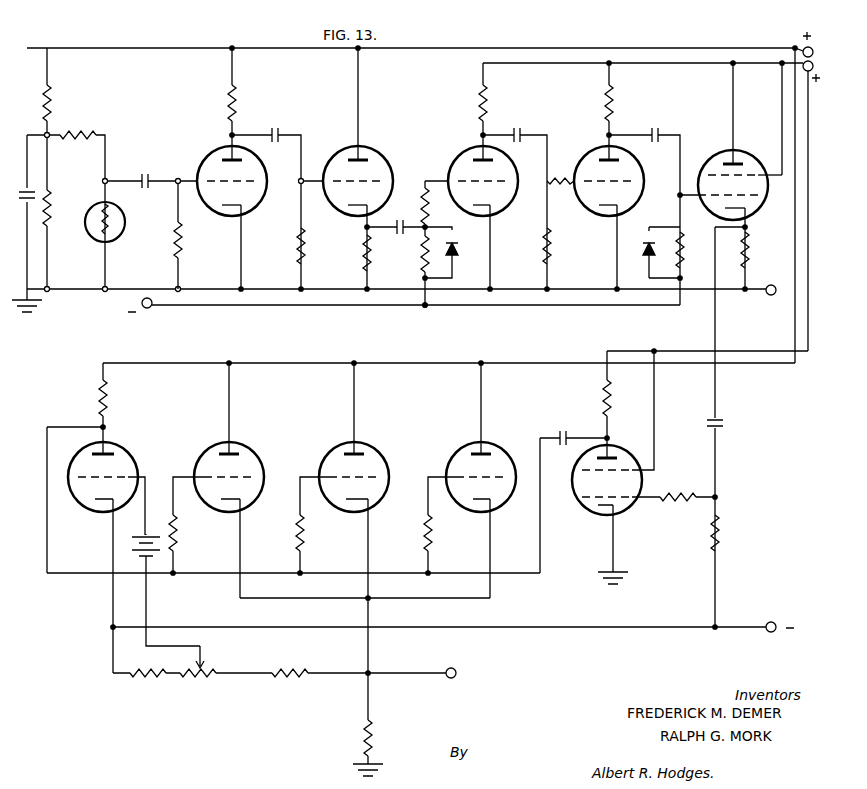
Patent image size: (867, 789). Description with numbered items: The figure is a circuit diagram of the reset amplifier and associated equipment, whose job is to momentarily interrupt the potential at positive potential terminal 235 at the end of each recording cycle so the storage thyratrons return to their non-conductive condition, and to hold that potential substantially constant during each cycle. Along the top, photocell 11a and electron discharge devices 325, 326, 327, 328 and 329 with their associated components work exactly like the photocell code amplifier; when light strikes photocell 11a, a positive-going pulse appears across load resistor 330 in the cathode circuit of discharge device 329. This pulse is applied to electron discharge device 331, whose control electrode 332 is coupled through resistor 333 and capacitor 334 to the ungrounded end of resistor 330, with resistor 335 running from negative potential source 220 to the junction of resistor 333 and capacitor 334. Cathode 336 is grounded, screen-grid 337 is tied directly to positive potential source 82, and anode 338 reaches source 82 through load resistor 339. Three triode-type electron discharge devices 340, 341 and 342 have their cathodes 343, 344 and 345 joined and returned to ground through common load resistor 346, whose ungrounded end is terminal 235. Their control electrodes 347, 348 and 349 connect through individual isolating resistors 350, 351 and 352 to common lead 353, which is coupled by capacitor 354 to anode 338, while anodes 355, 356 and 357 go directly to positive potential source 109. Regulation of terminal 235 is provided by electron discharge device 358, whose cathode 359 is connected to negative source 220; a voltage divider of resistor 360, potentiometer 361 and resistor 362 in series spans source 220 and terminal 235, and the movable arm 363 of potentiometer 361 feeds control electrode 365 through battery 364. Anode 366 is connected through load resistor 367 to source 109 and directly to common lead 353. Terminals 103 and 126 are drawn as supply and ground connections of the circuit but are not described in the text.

The photocell 11a is at (120, 236).
The positive potential source 82 is at (803, 49).
The positive potential source 109 is at (804, 69).
The negative supply terminal 103 is at (150, 306).
The ground terminal 126 is at (768, 296).
The negative potential source 220 is at (769, 623).
The positive potential terminal 235 is at (457, 674).
The electron discharge device 325 is at (249, 209).
The electron discharge device 326 is at (334, 212).
The electron discharge device 327 is at (500, 211).
The electron discharge device 328 is at (590, 211).
The electron discharge device 329 is at (748, 167).
The load resistor 330 is at (750, 263).
The electron discharge device 331 is at (583, 487).
The control electrode 332 is at (618, 495).
The resistor 333 is at (680, 505).
The capacitor 334 is at (724, 426).
The resistor 335 is at (722, 540).
The cathode 336 is at (607, 510).
The screen-grid 337 is at (625, 466).
The anode 338 is at (590, 466).
The load resistor 339 is at (603, 398).
The electron discharge device 340 is at (494, 462).
The electron discharge device 341 is at (378, 465).
The electron discharge device 342 is at (247, 460).
The cathode 343 is at (481, 501).
The cathode 344 is at (354, 501).
The cathode 345 is at (226, 501).
The common load resistor 346 is at (362, 740).
The control electrode 347 is at (503, 480).
The control electrode 348 is at (376, 480).
The control electrode 349 is at (250, 480).
The isolating resistor 350 is at (422, 540).
The isolating resistor 351 is at (295, 538).
The isolating resistor 352 is at (178, 540).
The common lead 353 is at (332, 576).
The capacitor 354 is at (575, 427).
The anode 355 is at (474, 452).
The anode 356 is at (348, 452).
The anode 357 is at (225, 452).
The electron discharge device 358 is at (128, 462).
The cathode 359 is at (103, 500).
The resistor 360 is at (155, 685).
The potentiometer 361 is at (202, 685).
The resistor 362 is at (290, 685).
The movable arm 363 is at (204, 658).
The battery 364 is at (152, 552).
The control electrode 365 is at (83, 478).
The anode 366 is at (112, 452).
The load resistor 367 is at (99, 395).